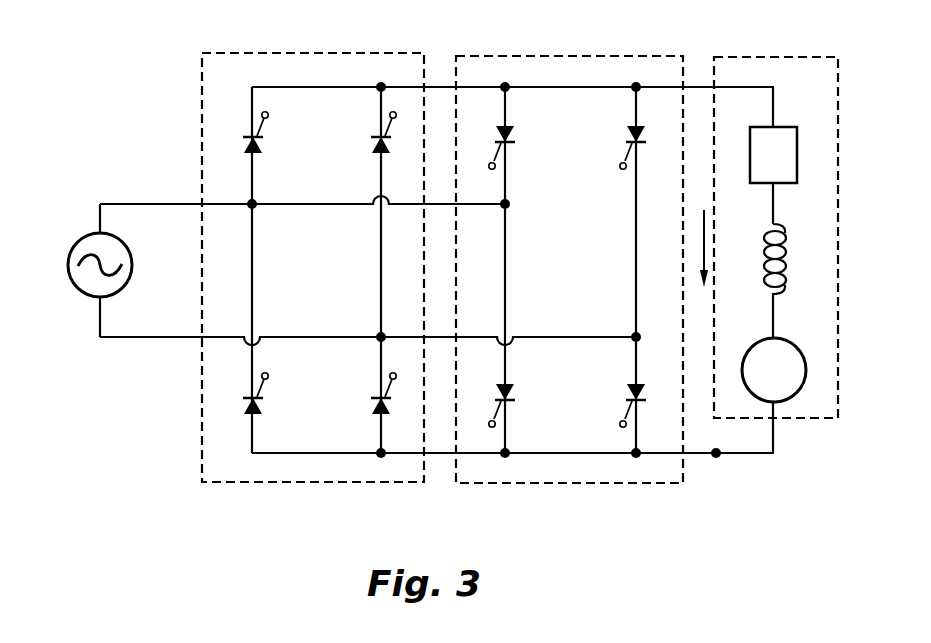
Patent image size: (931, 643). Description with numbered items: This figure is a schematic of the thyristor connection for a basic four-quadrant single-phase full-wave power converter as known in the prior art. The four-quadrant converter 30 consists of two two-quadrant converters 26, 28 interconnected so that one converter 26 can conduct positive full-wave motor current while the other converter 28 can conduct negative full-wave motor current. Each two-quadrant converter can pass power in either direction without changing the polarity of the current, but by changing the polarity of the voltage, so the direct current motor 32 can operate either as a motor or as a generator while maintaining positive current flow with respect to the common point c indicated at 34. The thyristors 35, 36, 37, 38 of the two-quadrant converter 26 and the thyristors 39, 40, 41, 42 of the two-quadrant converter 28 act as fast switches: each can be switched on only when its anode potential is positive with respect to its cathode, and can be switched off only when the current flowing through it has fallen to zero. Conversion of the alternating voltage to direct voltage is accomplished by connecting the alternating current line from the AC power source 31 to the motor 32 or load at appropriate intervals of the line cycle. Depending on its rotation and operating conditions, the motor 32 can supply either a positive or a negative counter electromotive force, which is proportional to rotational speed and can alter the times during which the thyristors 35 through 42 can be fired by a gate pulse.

The two-quadrant converter 26 is at (202, 53).
The two-quadrant converter 28 is at (622, 56).
The four-quadrant converter 30 is at (480, 494).
The AC power source 31 is at (133, 262).
The direct current motor 32 is at (783, 56).
The common point c 34 is at (716, 458).
The thyristor 35 is at (262, 148).
The thyristor 36 is at (262, 408).
The thyristor 37 is at (372, 150).
The thyristor 38 is at (372, 410).
The thyristor 39 is at (513, 134).
The thyristor 40 is at (628, 134).
The thyristor 41 is at (513, 392).
The thyristor 42 is at (627, 394).